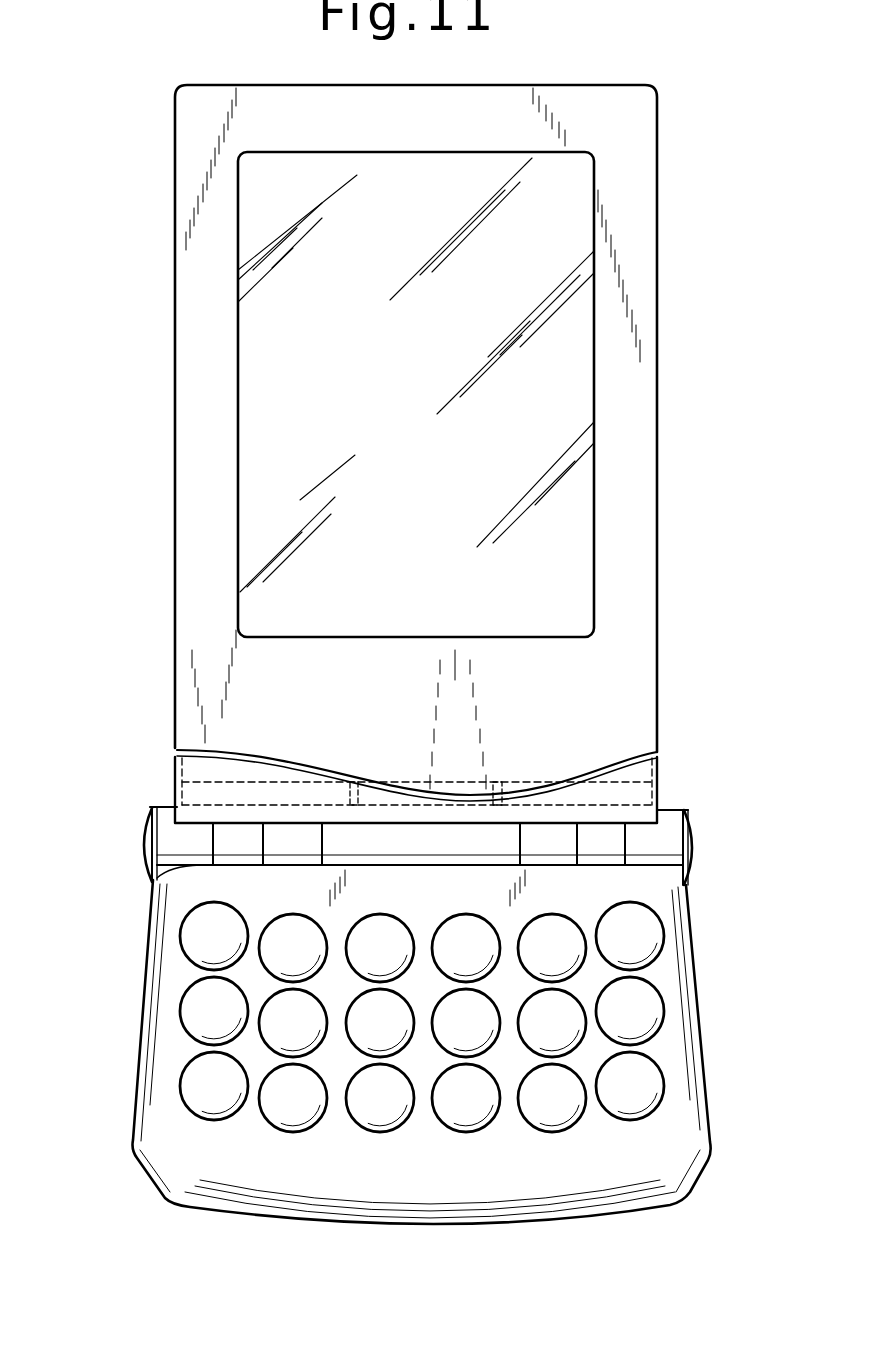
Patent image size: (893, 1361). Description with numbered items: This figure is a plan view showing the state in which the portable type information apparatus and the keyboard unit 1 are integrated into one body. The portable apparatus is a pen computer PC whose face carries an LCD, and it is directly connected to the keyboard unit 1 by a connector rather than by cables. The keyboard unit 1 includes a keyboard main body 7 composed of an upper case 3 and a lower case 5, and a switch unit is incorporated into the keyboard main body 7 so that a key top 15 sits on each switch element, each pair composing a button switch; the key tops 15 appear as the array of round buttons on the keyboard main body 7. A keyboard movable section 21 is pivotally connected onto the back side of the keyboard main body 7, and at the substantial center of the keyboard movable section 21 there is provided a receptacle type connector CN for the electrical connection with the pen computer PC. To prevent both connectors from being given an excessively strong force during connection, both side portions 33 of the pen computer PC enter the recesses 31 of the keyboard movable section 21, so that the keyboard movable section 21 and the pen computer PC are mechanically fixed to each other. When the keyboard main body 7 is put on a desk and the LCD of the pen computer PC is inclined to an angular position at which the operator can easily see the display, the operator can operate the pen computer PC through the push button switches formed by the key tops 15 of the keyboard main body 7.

The keyboard unit 1 is at (457, 848).
The upper case 3 is at (453, 1044).
The lower case 5 is at (693, 1043).
The keyboard main body 7 is at (743, 800).
The key top 15 is at (393, 1118).
The keyboard movable section 21 is at (658, 799).
The recesses 31 is at (173, 789).
The side portions 33 is at (175, 762).
The pen computer PC is at (173, 248).
The receptacle type connector CN is at (383, 800).
The element LCD is at (416, 394).